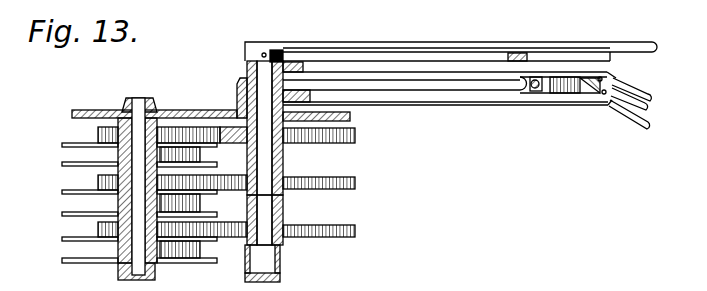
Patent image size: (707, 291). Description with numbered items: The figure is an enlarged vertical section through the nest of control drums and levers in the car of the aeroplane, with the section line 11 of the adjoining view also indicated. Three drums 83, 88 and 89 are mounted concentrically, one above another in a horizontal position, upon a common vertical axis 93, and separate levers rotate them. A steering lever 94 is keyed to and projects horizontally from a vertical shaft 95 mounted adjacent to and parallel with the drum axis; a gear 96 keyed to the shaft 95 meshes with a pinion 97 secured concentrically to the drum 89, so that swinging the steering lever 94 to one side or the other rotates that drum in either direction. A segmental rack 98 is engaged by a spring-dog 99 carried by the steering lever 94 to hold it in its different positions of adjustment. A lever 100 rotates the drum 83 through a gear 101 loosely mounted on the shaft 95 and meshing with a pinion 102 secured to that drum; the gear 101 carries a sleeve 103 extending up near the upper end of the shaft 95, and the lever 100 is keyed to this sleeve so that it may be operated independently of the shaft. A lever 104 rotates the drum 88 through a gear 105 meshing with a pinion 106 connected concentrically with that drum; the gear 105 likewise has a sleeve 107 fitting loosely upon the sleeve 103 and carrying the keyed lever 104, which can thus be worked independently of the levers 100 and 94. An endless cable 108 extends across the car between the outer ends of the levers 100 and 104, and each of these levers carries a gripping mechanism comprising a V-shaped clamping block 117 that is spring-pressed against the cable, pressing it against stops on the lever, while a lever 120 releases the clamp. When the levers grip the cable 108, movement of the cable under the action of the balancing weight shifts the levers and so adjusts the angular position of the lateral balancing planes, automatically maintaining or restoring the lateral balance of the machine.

The section line 11 is at (366, 10).
The drum 83 is at (75, 203).
The drum 88 is at (75, 153).
The drum 89 is at (72, 250).
The vertical axis 93 is at (149, 110).
The steering lever 94 is at (467, 43).
The vertical shaft 95 is at (282, 214).
The gear 96 is at (335, 237).
The pinion 97 is at (97, 230).
The segmental rack 98 is at (540, 58).
The spring-dog 99 is at (522, 52).
The lever 100 is at (398, 62).
The gear 101 is at (356, 186).
The pinion 102 is at (97, 182).
The sleeve 103 is at (281, 168).
The lever 104 is at (478, 100).
The gear 105 is at (356, 140).
The pinion 106 is at (97, 135).
The sleeve 107 is at (240, 90).
The endless cable 108 is at (536, 94).
The V-shaped clamping block 117 is at (549, 72).
The lever 120 is at (618, 90).